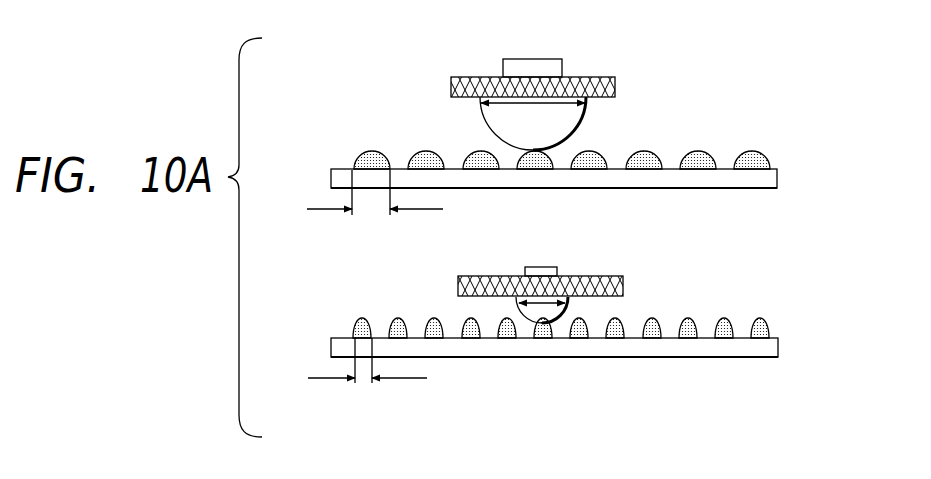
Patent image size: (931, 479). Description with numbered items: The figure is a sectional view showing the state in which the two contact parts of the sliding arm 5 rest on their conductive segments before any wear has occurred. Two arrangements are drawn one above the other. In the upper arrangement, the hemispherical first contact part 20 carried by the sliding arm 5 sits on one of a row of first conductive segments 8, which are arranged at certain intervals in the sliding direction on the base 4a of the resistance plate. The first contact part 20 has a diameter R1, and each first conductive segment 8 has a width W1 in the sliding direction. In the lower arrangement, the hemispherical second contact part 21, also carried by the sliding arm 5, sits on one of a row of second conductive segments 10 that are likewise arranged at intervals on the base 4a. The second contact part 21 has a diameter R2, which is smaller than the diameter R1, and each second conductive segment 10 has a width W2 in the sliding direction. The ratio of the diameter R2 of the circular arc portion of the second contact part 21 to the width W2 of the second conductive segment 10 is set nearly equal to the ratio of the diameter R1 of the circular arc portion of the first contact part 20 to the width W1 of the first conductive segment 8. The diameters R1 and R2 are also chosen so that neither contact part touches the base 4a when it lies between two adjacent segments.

The base 4a is at (770, 177).
The sliding arm 5 is at (600, 77).
The first conductive segments 8 is at (652, 151).
The second conductive segments 10 is at (654, 320).
The first contact part 20 is at (585, 128).
The second contact part 21 is at (565, 312).
The diameter of first contact part R1 is at (506, 117).
The diameter of second contact part R2 is at (522, 310).
The width of first conductive segment W1 is at (372, 210).
The width of second conductive segment W2 is at (362, 382).